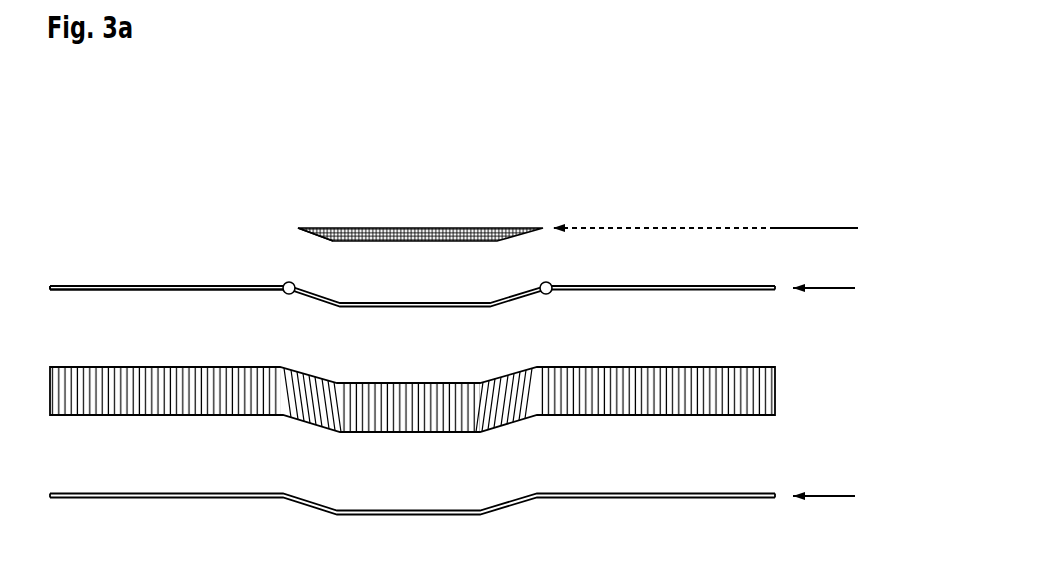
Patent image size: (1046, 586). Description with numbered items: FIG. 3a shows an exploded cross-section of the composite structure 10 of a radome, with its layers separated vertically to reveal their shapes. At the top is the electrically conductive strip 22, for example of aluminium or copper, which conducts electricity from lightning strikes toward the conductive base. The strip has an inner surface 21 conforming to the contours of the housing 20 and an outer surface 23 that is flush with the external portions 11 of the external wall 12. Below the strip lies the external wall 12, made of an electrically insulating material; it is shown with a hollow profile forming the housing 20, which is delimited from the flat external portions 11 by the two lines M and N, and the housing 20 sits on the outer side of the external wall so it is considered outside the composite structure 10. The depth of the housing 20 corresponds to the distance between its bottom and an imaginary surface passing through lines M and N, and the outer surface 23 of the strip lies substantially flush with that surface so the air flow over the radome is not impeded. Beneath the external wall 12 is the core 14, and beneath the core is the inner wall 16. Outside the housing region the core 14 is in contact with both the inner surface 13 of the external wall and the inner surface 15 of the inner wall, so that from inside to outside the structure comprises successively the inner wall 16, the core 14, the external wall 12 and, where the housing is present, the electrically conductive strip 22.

The composite structure 10 is at (141, 201).
The external portions of the external wall 11 is at (697, 285).
The external wall 12 is at (852, 288).
The inner surface of the external wall 13 is at (100, 297).
The core 14 is at (793, 393).
The inner surface of the inner wall 15 is at (699, 487).
The inner wall 16 is at (852, 496).
The housing 20 is at (521, 285).
The inner surface of the electrically conductive strip 21 is at (331, 243).
The electrically conductive strip 22 is at (843, 228).
The outer surface of the electrically conductive strip 23 is at (481, 226).